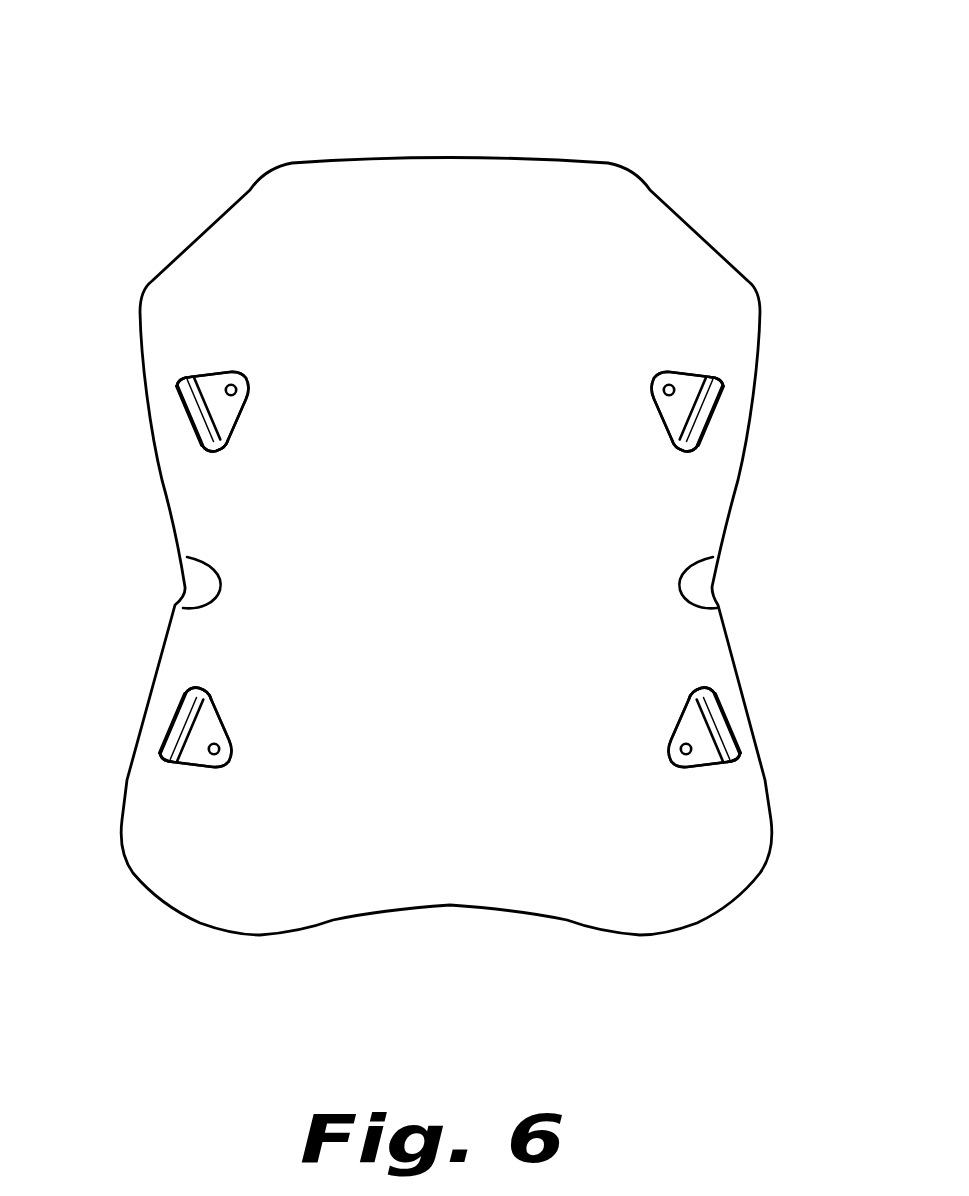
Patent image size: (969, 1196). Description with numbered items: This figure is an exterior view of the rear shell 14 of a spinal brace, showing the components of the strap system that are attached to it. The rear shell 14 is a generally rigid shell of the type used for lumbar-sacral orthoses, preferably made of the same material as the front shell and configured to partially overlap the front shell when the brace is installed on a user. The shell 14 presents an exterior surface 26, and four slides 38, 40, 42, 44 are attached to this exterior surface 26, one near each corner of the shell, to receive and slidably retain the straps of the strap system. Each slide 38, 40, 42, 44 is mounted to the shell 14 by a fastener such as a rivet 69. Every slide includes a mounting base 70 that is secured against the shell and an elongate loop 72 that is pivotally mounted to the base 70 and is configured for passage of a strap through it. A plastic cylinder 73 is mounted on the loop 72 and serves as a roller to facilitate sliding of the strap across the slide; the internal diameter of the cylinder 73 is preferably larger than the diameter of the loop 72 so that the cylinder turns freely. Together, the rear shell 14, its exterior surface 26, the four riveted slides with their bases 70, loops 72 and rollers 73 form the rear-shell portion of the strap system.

The rear shell 14 is at (455, 471).
The exterior surface 26 is at (462, 563).
The slide 38 is at (669, 707).
The slide 40 is at (626, 419).
The slide 42 is at (262, 395).
The slide 44 is at (230, 702).
The rivet 69 is at (237, 387).
The mounting base 70 is at (213, 388).
The elongate loop 72 is at (214, 440).
The plastic cylinder 73 is at (190, 417).